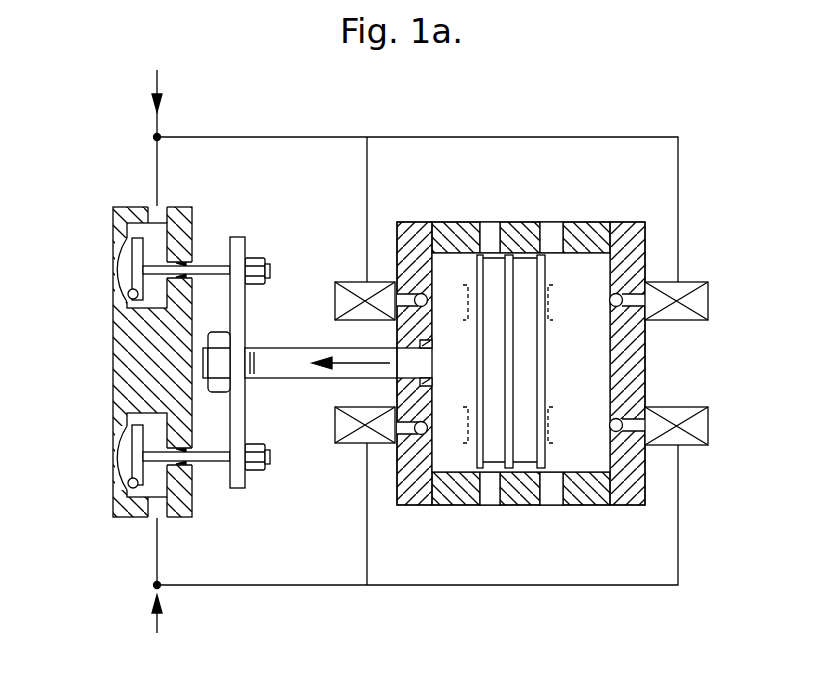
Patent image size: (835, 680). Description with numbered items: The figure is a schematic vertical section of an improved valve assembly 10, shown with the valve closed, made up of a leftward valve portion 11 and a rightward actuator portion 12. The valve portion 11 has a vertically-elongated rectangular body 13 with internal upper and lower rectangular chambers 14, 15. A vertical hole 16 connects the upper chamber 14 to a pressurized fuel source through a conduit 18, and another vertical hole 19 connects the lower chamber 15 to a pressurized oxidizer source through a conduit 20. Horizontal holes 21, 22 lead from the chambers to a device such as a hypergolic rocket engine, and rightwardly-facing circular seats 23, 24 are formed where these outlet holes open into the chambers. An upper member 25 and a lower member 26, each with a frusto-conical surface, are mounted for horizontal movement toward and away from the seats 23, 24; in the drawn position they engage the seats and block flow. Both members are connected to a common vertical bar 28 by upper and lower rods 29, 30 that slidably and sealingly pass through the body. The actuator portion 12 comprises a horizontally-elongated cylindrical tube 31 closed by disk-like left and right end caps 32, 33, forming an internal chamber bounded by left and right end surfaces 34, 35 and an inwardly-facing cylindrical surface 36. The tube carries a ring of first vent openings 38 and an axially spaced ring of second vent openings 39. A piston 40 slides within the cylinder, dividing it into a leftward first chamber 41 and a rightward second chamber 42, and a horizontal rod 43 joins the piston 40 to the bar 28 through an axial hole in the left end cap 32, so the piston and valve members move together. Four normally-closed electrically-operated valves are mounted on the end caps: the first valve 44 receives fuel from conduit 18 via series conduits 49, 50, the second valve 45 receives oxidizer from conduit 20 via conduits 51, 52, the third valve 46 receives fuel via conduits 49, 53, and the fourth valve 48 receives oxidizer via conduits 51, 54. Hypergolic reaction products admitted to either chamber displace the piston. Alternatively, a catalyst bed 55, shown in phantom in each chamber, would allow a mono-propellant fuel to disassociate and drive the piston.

The valve assembly 10 is at (456, 110).
The valve portion 11 is at (100, 200).
The actuator portion 12 is at (459, 215).
The body 13 is at (113, 362).
The upper chamber 14 is at (169, 251).
The lower chamber 15 is at (169, 439).
The vertical hole 16 is at (161, 207).
The conduit 18 is at (159, 136).
The vertical hole 19 is at (161, 518).
The conduit 20 is at (160, 587).
The horizontal hole 21 is at (126, 252).
The horizontal hole 22 is at (126, 446).
The seat 23 is at (129, 296).
The seat 24 is at (129, 484).
The upper member 25 is at (133, 272).
The lower member 26 is at (133, 460).
The bar 28 is at (246, 311).
The upper rod 29 is at (210, 266).
The lower rod 30 is at (210, 453).
The cylindrical tube 31 is at (523, 222).
The left end cap 32 is at (420, 222).
The right end cap 33 is at (632, 222).
The left end surface 34 is at (432, 333).
The right end surface 35 is at (610, 343).
The cylindrical surface 36 is at (446, 255).
The first vent openings 38 is at (480, 222).
The second vent openings 39 is at (545, 222).
The piston 40 is at (520, 366).
The first chamber 41 is at (462, 400).
The second chamber 42 is at (588, 398).
The horizontal rod 43 is at (285, 378).
The first valve 44 is at (352, 282).
The second valve 45 is at (352, 443).
The third valve 46 is at (690, 282).
The fourth valve 48 is at (690, 407).
The conduit 49 is at (310, 137).
The conduit 50 is at (367, 181).
The conduit 51 is at (309, 585).
The conduit 52 is at (367, 513).
The conduit 53 is at (540, 137).
The conduit 54 is at (539, 585).
The catalyst bed 55 is at (468, 300).